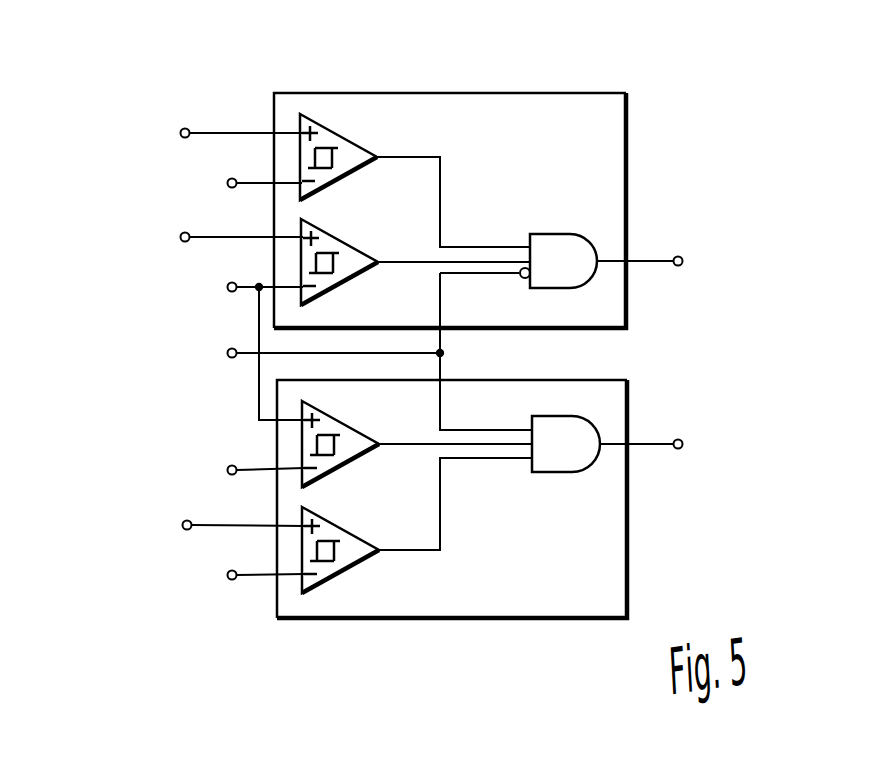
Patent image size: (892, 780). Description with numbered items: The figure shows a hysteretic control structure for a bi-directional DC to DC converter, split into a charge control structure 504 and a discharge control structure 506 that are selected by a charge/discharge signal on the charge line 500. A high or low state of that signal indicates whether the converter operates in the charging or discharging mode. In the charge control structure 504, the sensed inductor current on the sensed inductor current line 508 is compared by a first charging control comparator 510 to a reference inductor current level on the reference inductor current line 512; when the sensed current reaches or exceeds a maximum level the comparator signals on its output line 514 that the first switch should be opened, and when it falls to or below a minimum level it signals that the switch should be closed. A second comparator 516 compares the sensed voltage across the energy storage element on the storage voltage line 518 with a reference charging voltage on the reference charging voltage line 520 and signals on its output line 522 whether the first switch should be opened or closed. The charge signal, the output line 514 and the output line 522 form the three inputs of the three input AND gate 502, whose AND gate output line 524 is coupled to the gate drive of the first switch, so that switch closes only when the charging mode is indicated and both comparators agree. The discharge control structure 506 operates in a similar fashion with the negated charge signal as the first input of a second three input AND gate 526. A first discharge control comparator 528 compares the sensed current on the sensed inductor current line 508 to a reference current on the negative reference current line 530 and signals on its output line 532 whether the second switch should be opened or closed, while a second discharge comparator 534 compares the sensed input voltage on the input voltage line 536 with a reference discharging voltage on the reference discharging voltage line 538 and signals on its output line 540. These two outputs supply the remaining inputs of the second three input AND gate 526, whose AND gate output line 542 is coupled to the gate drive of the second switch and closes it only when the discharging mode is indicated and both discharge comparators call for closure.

The charge line 500 is at (250, 354).
The three input AND gate 502 is at (582, 420).
The charge control structure 504 is at (627, 548).
The discharge control structure 506 is at (575, 93).
The i_L line 508 is at (250, 290).
The first charging control comparator 510 is at (300, 455).
The I_L line 512 is at (252, 472).
The output line 514 is at (408, 447).
The second comparator 516 is at (350, 565).
The v_2 line 518 is at (252, 578).
The v_2,ref line 520 is at (208, 528).
The output line 522 is at (407, 550).
The AND gate output line 524 is at (648, 443).
The second three input AND gate 526 is at (585, 240).
The first discharge control comparator 528 is at (433, 320).
The -I_L line 530 is at (208, 238).
The output line 532 is at (413, 260).
The second discharge comparator 534 is at (325, 132).
The v_1 line 536 is at (245, 181).
The v_1,ref line 538 is at (212, 133).
The output line 540 is at (427, 157).
The AND gate output line 542 is at (648, 260).